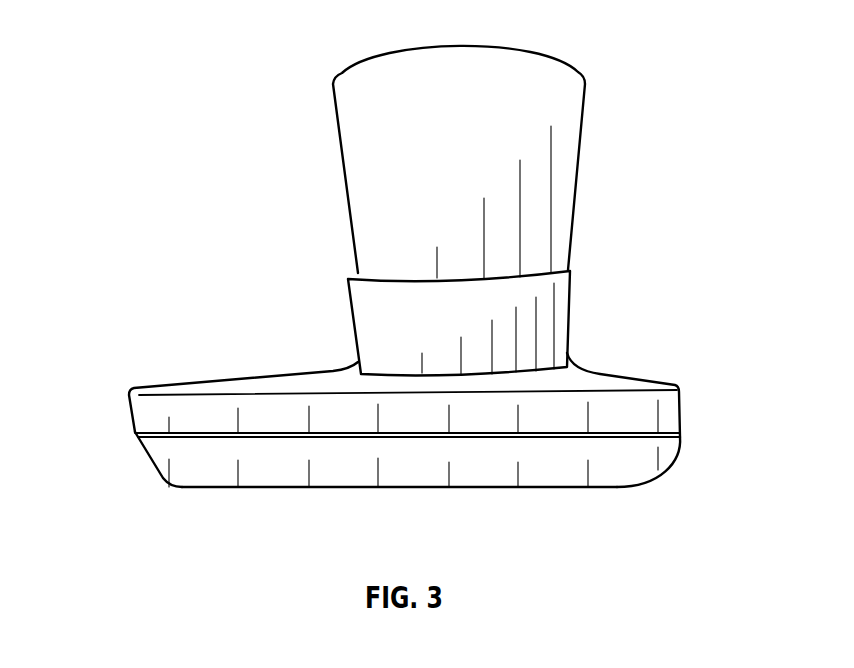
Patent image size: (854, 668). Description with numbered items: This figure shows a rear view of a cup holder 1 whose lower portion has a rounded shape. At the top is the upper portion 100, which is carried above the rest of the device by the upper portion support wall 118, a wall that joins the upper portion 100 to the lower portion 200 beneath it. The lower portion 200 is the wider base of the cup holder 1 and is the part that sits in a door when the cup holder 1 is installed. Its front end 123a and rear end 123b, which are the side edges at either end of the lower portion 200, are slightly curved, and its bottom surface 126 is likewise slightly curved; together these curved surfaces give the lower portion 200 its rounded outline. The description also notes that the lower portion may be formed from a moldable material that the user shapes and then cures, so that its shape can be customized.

The cup holder 1 is at (477, 70).
The upper portion 100 is at (562, 195).
The upper portion support wall 118 is at (565, 335).
The lower portion 200 is at (463, 453).
The front end of lower portion 123a is at (155, 462).
The rear end of lower portion 123b is at (668, 465).
The bottom surface of lower portion 126 is at (347, 490).